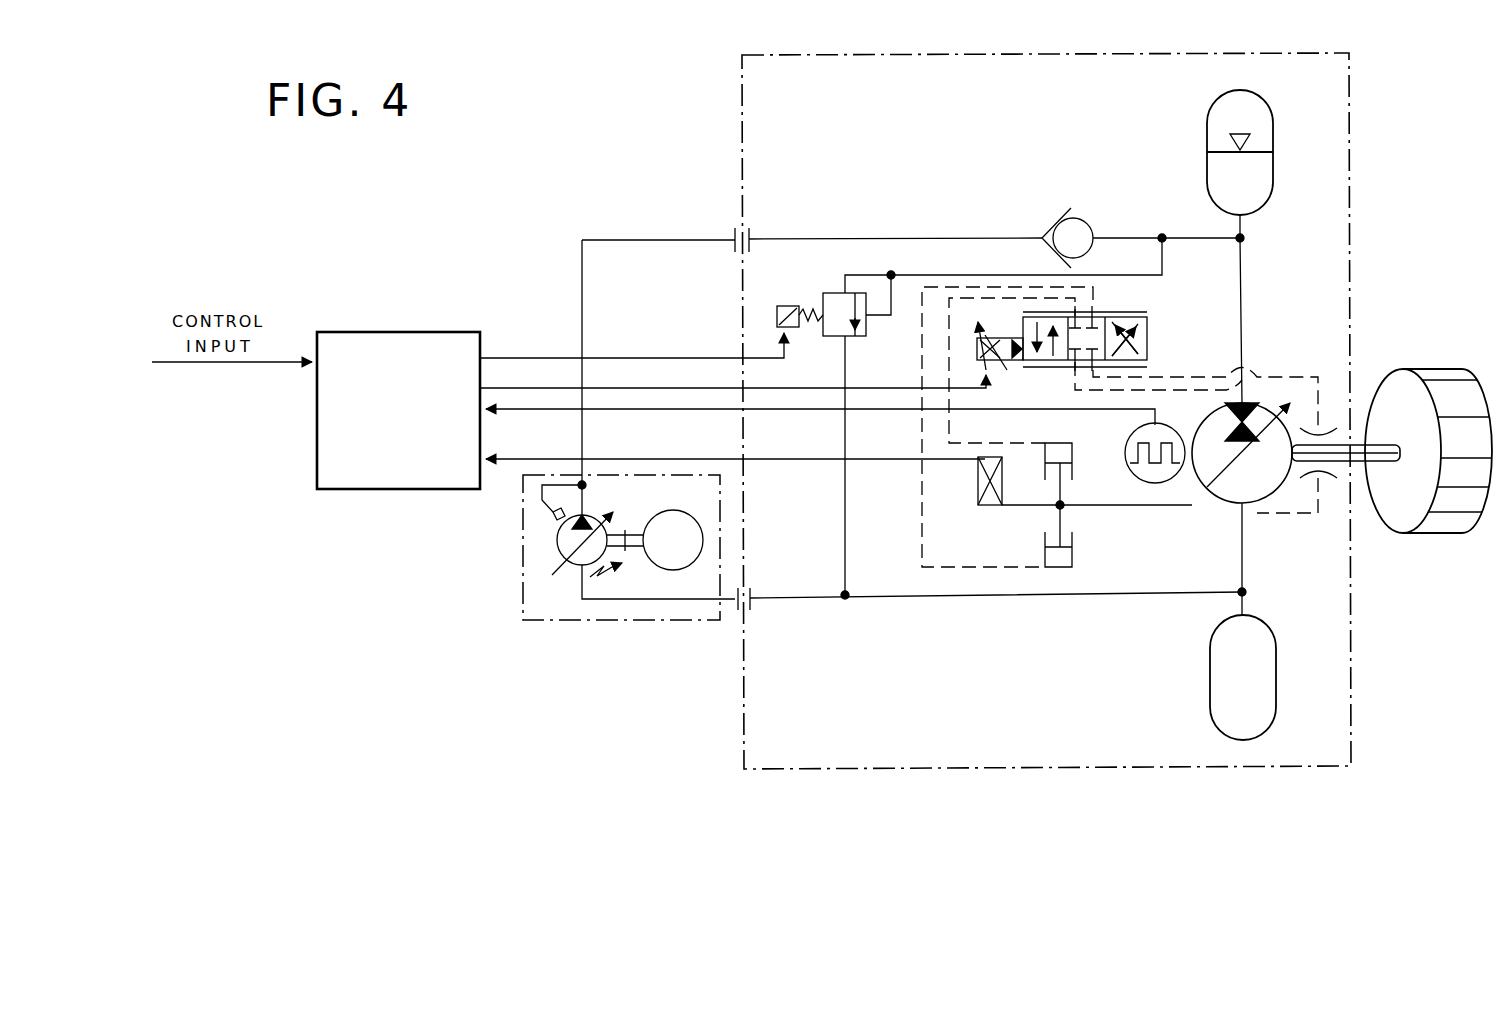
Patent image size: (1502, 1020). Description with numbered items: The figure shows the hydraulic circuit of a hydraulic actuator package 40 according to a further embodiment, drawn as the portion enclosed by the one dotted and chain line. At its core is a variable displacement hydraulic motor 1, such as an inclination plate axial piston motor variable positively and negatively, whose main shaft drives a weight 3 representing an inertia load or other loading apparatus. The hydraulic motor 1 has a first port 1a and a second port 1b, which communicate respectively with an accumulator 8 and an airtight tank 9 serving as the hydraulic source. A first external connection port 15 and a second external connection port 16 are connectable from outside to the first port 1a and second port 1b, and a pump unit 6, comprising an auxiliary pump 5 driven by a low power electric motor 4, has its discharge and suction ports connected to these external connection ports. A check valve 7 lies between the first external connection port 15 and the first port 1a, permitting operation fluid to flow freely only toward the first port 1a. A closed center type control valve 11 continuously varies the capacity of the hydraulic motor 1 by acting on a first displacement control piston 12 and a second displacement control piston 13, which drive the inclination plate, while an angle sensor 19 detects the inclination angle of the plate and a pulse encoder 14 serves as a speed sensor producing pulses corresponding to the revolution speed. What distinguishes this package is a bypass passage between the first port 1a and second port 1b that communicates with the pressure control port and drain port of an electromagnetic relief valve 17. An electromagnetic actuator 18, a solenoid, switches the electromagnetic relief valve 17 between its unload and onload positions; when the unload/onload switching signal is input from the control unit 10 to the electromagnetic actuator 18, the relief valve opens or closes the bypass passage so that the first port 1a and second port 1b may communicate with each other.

The hydraulic motor 1 is at (1210, 509).
The first port 1a is at (1252, 235).
The second port 1b is at (1252, 591).
The weight 3 is at (1431, 378).
The electric motor 4 is at (658, 516).
The auxiliary pump 5 is at (580, 565).
The pump unit 6 is at (612, 626).
The check valve 7 is at (1061, 210).
The accumulator 8 is at (1275, 137).
The airtight tank 9 is at (1210, 668).
The control unit 10 is at (393, 491).
The closed center type control valve 11 is at (1156, 325).
The first displacement control piston 12 is at (1073, 449).
The second displacement control piston 13 is at (1073, 562).
The pulse encoder 14 is at (1130, 468).
The first external connection port 15 is at (731, 231).
The second external connection port 16 is at (735, 621).
The electromagnetic relief valve 17 is at (832, 292).
The electromagnetic actuator 18 is at (787, 305).
The angle sensor 19 is at (978, 486).
The hydraulic actuator package 40 is at (1356, 157).